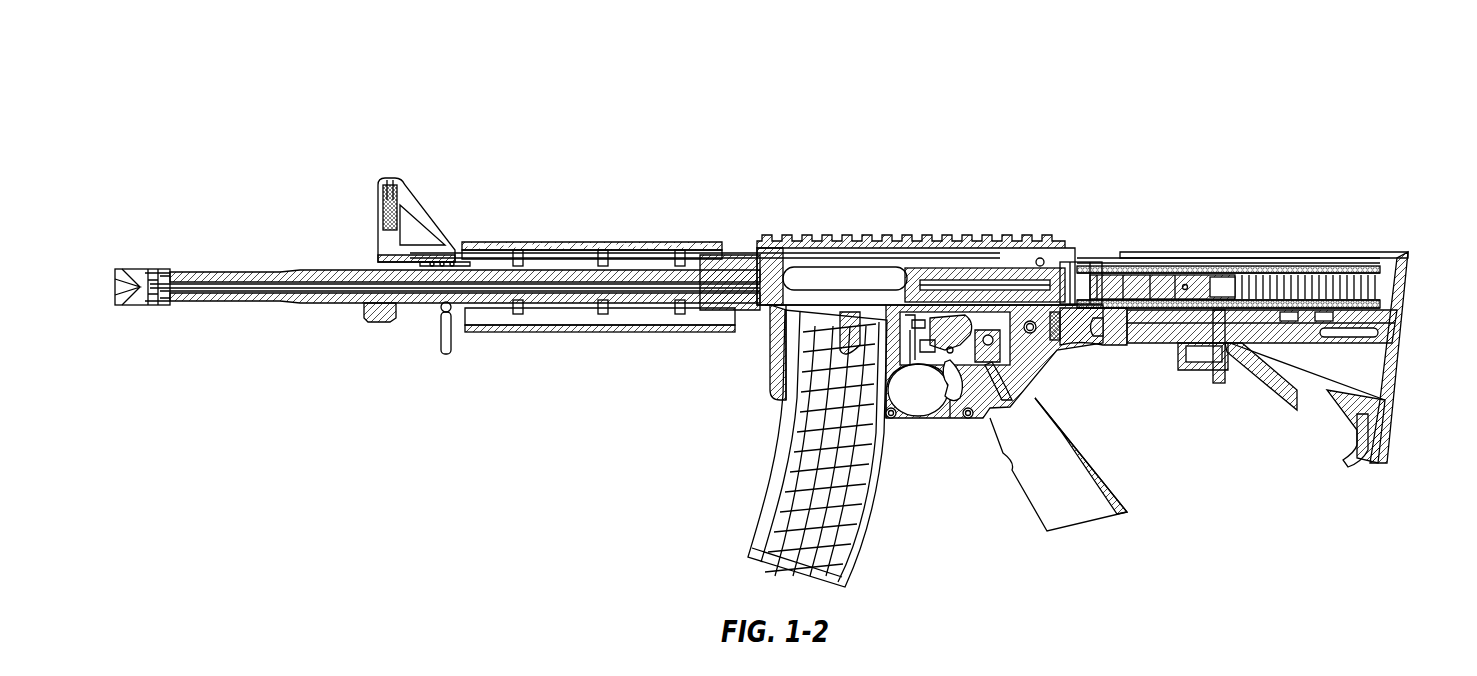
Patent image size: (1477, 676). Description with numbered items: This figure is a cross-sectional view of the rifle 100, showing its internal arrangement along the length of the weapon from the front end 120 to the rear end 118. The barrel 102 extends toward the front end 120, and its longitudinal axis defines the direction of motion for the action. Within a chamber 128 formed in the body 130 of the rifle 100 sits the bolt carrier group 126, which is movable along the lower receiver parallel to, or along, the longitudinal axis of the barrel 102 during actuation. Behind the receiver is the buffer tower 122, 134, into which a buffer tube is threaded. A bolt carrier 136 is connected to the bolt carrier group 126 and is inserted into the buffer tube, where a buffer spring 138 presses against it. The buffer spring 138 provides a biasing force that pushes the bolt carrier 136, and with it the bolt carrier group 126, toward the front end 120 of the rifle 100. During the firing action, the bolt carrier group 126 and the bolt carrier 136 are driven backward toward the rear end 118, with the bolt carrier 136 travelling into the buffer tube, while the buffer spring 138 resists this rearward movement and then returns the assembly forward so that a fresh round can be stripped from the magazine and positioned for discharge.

The rifle 100 is at (1394, 70).
The barrel 102 is at (228, 302).
The rear end 118 is at (1398, 240).
The front end 120 is at (135, 238).
The buffer tower 122 is at (1088, 258).
The bolt carrier group 126 is at (1010, 255).
The chamber 128 is at (815, 258).
The body 130 is at (885, 248).
The buffer tower 134 is at (1180, 265).
The bolt carrier 136 is at (1065, 250).
The buffer spring 138 is at (1275, 265).